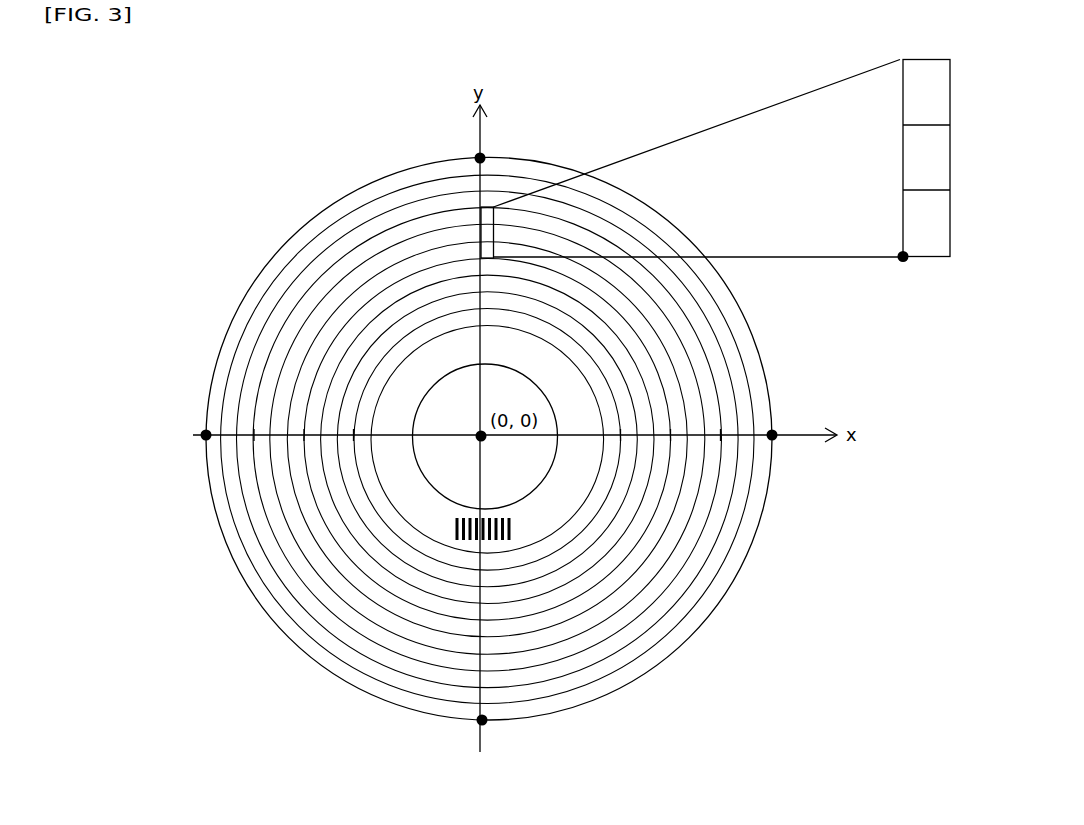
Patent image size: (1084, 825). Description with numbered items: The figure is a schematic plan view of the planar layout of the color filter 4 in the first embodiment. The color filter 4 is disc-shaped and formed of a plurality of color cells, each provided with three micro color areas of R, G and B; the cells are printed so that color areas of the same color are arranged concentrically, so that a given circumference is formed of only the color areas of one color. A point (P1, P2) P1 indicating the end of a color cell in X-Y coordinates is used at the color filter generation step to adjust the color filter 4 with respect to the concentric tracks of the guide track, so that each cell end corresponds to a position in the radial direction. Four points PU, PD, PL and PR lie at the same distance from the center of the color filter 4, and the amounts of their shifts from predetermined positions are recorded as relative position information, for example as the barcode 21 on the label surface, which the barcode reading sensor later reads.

The color filter 4 is at (257, 277).
The barcode 21 is at (467, 516).
The point PU is at (463, 151).
The point PD is at (496, 736).
The point PL is at (188, 447).
The point PR is at (787, 426).
The point (P1, P2) P1 is at (715, 179).